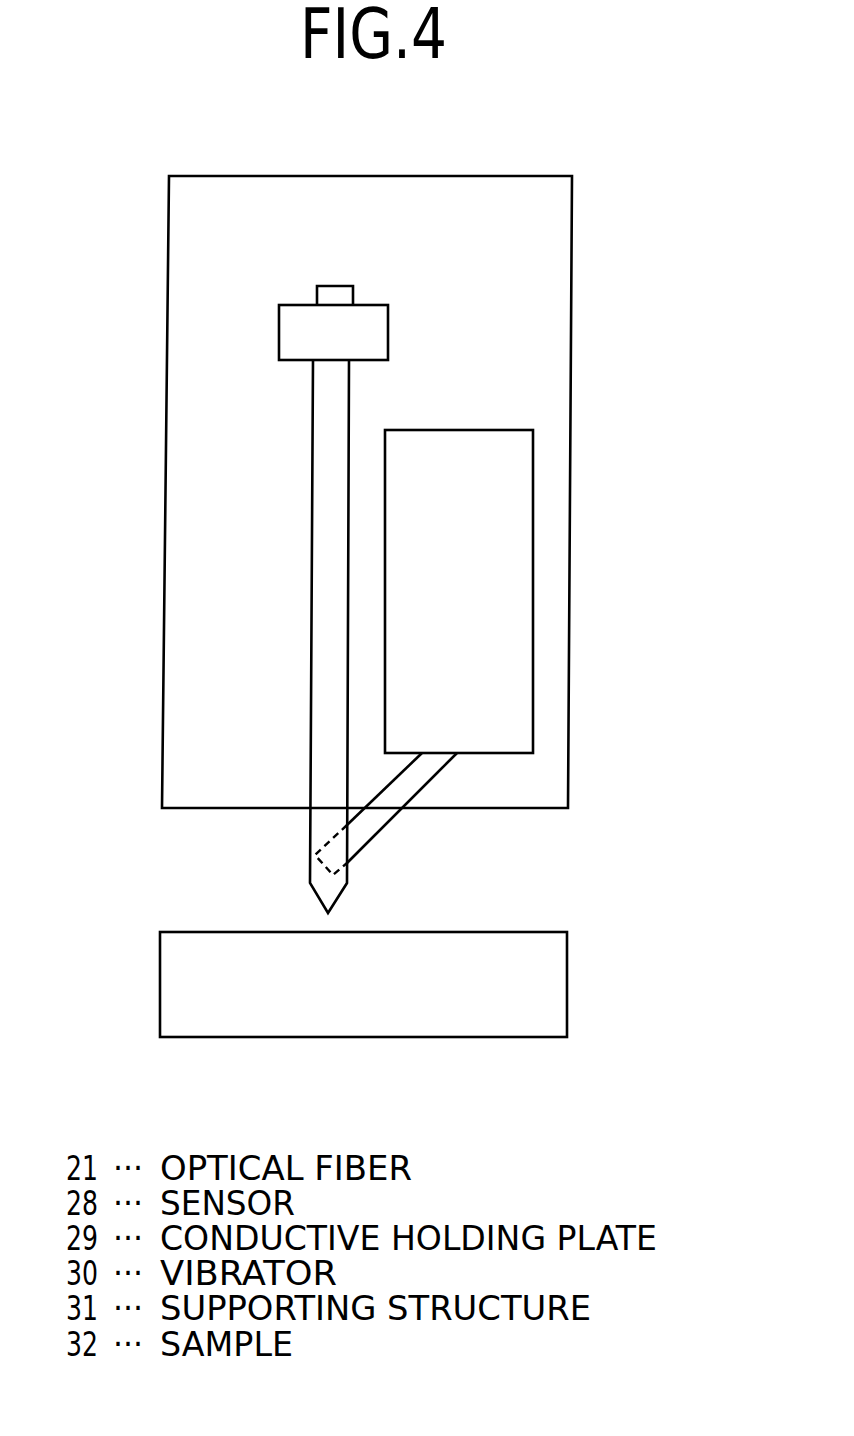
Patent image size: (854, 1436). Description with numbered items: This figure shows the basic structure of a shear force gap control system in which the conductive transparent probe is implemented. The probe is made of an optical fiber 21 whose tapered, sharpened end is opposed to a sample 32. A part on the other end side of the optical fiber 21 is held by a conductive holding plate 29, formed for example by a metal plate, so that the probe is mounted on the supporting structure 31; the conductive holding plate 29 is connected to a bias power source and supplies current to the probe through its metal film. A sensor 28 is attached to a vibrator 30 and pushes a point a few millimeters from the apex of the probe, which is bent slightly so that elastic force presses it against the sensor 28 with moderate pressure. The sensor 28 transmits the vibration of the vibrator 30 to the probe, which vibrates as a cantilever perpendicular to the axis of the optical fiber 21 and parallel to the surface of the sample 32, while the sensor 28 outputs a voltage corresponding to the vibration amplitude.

The optical fiber 21 is at (321, 577).
The sensor 28 is at (373, 825).
The conductive holding plate 29 is at (378, 333).
The vibrator 30 is at (515, 502).
The supporting structure 31 is at (566, 322).
The sample 32 is at (563, 981).